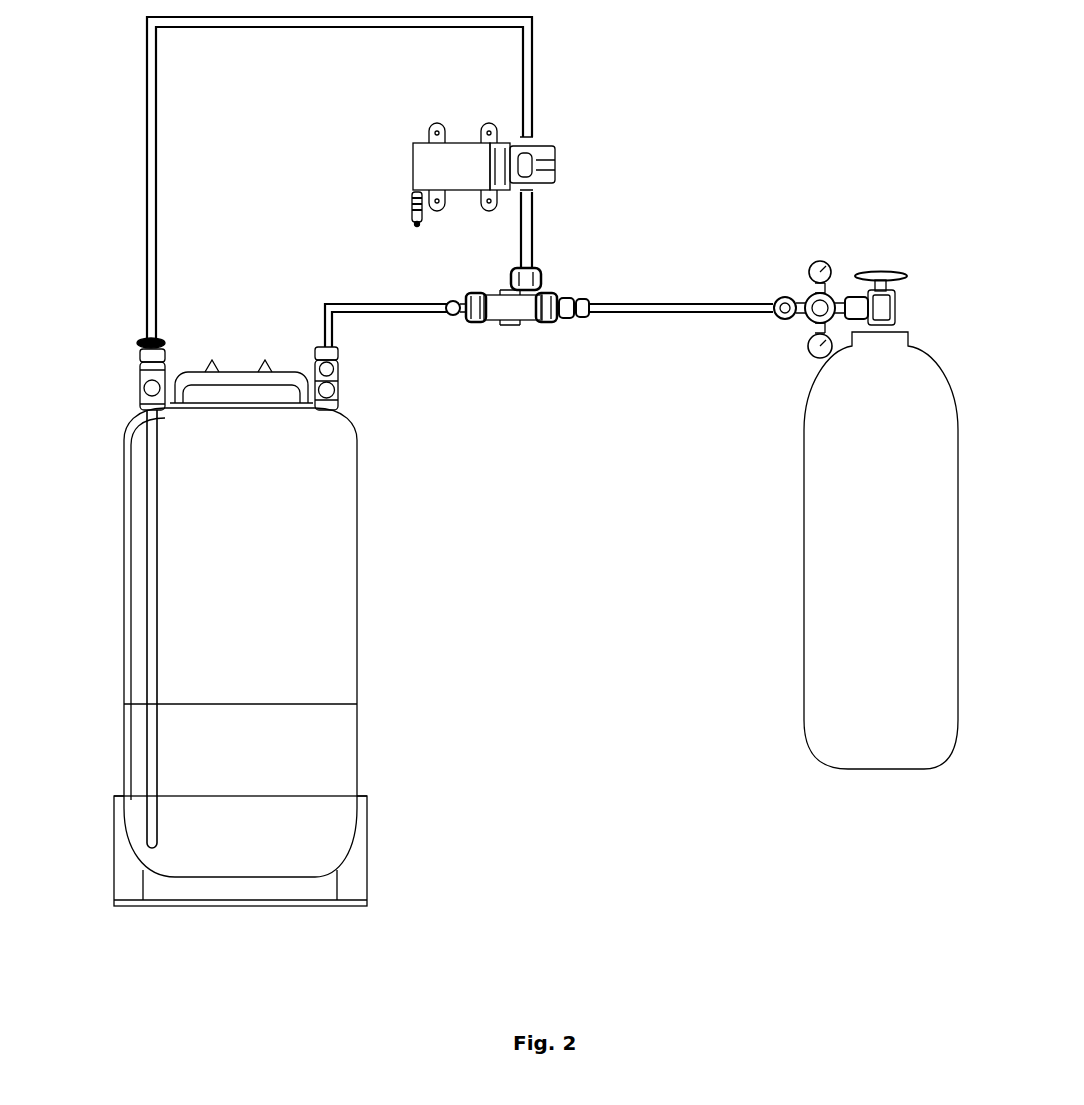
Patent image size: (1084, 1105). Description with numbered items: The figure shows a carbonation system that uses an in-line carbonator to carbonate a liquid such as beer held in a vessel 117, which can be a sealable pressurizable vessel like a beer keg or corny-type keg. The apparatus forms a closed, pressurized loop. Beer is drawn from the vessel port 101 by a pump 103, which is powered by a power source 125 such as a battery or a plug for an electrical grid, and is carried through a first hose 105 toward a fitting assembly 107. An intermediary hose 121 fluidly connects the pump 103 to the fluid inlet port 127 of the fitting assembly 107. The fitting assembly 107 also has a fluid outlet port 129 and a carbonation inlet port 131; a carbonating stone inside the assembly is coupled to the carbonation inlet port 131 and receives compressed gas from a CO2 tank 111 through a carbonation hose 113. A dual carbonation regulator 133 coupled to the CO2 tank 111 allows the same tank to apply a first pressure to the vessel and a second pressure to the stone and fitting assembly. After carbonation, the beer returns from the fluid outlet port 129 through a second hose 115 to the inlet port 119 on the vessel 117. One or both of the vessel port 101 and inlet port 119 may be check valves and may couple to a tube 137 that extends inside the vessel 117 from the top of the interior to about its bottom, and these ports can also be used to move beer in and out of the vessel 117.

The vessel port 101 is at (161, 344).
The pump 103 is at (425, 170).
The first hose 105 is at (158, 270).
The fitting assembly 107 is at (521, 320).
The CO2 tank 111 is at (827, 542).
The carbonation hose 113 is at (658, 314).
The second hose 115 is at (350, 307).
The vessel 117 is at (361, 561).
The inlet port 119 is at (338, 362).
The intermediary hose 121 is at (536, 230).
The power source 125 is at (410, 215).
The fluid inlet port 127 is at (543, 280).
The fluid outlet port 129 is at (484, 324).
The carbonation inlet port 131 is at (557, 323).
The dual carbonation regulator 133 is at (806, 300).
The tube 137 is at (151, 602).